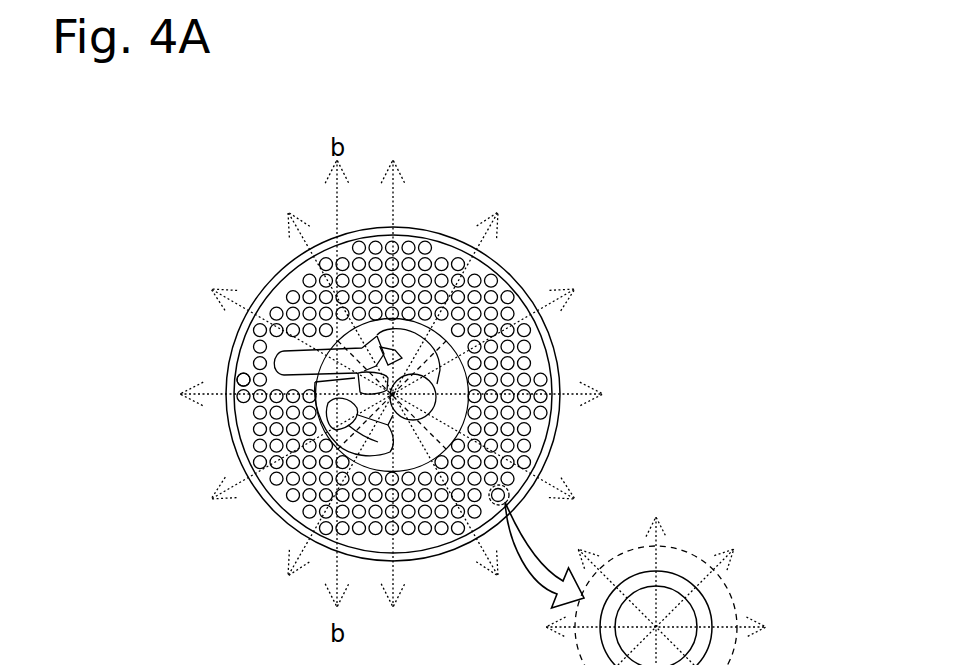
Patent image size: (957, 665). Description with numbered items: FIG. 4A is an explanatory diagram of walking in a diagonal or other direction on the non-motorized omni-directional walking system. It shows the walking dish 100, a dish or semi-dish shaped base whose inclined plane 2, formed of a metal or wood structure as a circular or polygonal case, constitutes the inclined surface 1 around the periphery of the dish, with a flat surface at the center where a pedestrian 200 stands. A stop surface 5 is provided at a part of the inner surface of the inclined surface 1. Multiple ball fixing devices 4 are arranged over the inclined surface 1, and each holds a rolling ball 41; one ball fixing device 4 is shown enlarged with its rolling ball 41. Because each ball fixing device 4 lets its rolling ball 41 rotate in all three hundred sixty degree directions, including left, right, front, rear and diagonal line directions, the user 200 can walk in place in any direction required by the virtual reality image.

The walking dish 100 is at (570, 322).
The inclined surface 1 is at (426, 230).
The inclined plane 2 is at (507, 278).
The stop surface 5 is at (463, 400).
The ball fixing device 4 is at (239, 373).
The rolling ball 41 is at (683, 643).
The pedestrian 200 is at (430, 358).